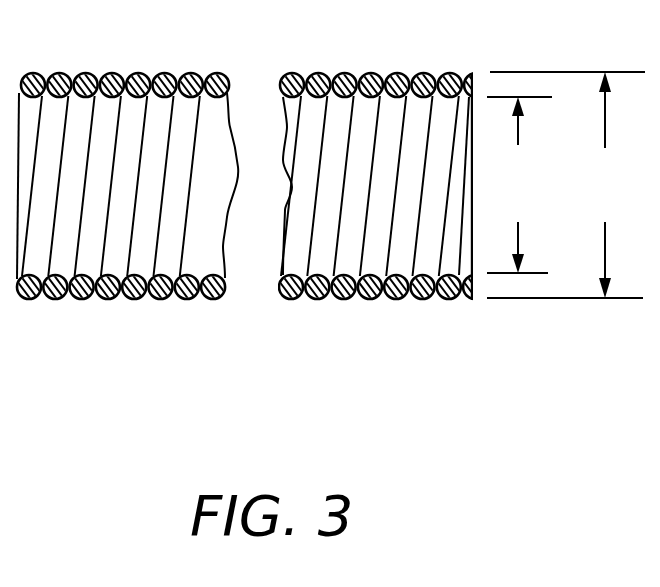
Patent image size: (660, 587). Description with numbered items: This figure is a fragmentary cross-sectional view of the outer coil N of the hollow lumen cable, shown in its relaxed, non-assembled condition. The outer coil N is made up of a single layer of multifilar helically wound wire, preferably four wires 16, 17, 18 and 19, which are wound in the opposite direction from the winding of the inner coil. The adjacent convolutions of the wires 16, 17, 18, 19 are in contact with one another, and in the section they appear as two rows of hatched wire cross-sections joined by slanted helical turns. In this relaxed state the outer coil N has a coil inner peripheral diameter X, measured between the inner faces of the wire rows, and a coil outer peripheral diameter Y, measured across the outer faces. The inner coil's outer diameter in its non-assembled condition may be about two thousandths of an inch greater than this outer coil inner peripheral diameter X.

The wire 16 is at (88, 72).
The wire 17 is at (85, 296).
The wire 18 is at (102, 296).
The wire 19 is at (146, 72).
The outer coil N is at (252, 187).
The coil inner peripheral diameter X is at (516, 185).
The coil outer peripheral diameter Y is at (604, 185).